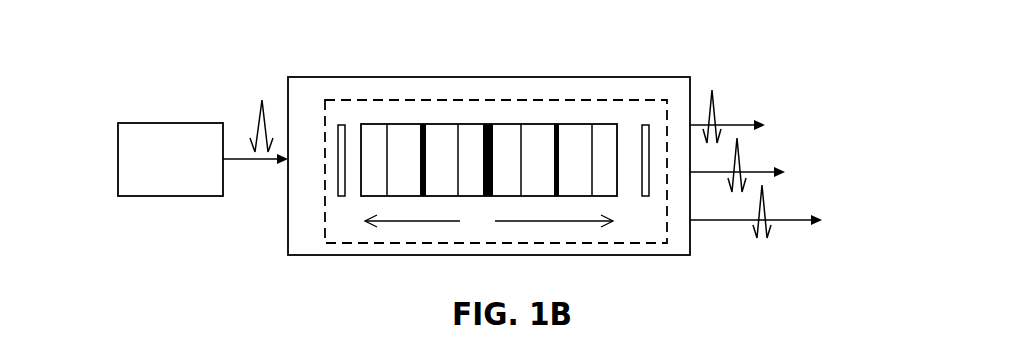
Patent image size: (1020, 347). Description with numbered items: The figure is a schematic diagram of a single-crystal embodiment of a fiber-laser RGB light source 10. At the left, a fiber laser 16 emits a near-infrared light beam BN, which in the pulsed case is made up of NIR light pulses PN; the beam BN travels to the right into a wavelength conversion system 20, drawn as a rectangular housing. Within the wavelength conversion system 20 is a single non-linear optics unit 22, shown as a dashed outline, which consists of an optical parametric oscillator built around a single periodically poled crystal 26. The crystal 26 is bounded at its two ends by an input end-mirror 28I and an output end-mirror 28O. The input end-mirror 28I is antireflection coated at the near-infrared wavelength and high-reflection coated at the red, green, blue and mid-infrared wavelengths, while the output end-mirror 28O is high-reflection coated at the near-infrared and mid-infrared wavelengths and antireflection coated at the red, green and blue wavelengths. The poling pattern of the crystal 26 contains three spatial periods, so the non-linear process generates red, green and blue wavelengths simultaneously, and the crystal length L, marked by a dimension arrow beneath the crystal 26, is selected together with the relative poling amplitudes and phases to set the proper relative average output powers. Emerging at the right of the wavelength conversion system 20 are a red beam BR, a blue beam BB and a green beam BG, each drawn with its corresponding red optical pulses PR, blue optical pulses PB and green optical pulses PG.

The fiber-laser RGB light source 10 is at (100, 60).
The fiber laser 16 is at (186, 175).
The wavelength conversion system 20 is at (325, 76).
The non-linear optics (NLO) unit 22 is at (447, 100).
The periodically poled crystal 26 is at (603, 124).
The input end-mirror 28I is at (343, 124).
The output end-mirror 28O is at (647, 124).
The NIR light pulses PN is at (257, 123).
The NIR light beam BN is at (238, 158).
The red optical pulses PR is at (715, 100).
The red beam BR is at (740, 125).
The blue optical pulses PB is at (738, 150).
The blue beam BB is at (765, 172).
The green optical pulses PG is at (763, 200).
The green beam BG is at (788, 218).
The crystal length L is at (489, 222).